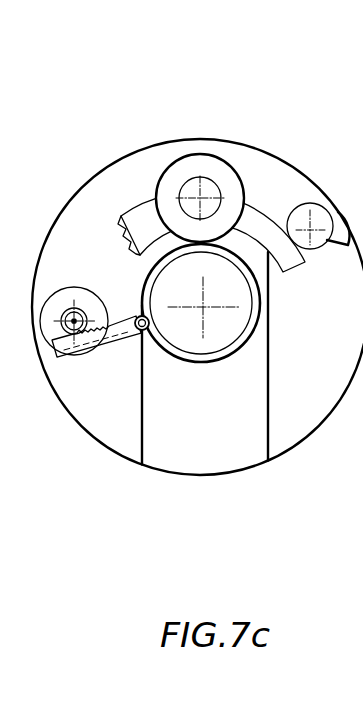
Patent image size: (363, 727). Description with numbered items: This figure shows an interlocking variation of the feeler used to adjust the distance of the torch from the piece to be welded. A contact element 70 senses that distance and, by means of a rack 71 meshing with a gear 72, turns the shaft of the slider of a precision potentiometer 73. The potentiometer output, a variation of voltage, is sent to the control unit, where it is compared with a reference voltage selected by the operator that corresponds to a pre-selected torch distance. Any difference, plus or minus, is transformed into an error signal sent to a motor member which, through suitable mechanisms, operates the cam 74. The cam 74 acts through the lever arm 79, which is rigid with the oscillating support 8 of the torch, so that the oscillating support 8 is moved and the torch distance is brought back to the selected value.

The oscillating support 8 is at (143, 227).
The contact element 70 is at (145, 328).
The rack 71 is at (115, 332).
The gear 72 is at (75, 322).
The precision potentiometer 73 is at (73, 303).
The cam 74 is at (330, 215).
The lever arm 79 is at (267, 232).